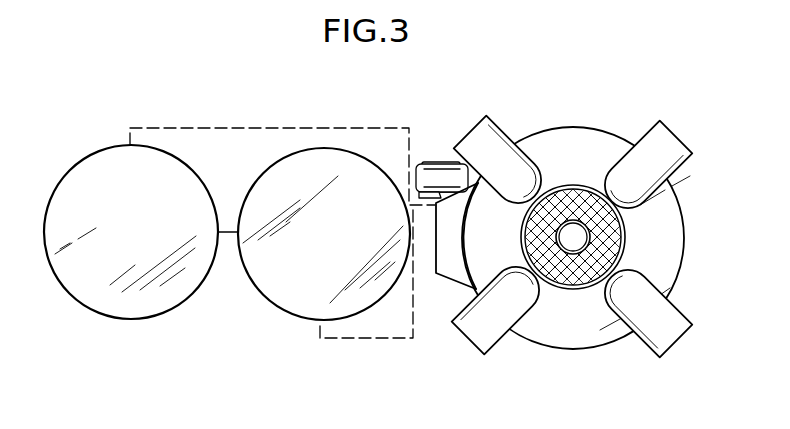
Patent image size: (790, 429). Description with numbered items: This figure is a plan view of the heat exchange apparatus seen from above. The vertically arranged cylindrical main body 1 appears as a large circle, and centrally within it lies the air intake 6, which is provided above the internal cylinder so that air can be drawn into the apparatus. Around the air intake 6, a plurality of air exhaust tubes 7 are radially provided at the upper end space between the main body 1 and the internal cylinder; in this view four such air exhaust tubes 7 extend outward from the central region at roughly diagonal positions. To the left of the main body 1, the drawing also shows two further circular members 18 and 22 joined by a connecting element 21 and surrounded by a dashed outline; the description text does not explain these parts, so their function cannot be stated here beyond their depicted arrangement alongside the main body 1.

The main body 1 is at (580, 128).
The air intake 6 is at (558, 185).
The air exhaust tubes 7 is at (476, 128).
The first sphere 18 is at (100, 153).
The connecting rod 21 is at (226, 234).
The second sphere 22 is at (316, 147).